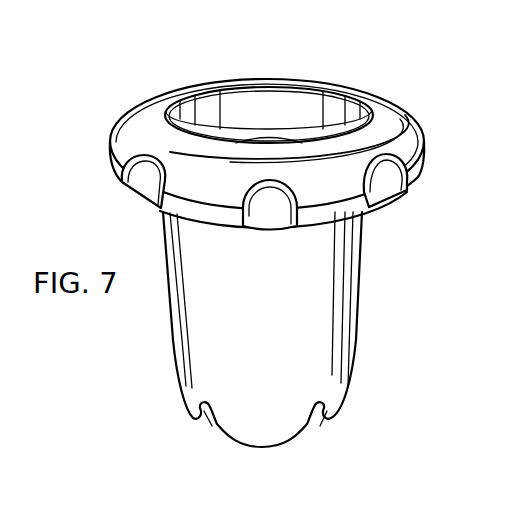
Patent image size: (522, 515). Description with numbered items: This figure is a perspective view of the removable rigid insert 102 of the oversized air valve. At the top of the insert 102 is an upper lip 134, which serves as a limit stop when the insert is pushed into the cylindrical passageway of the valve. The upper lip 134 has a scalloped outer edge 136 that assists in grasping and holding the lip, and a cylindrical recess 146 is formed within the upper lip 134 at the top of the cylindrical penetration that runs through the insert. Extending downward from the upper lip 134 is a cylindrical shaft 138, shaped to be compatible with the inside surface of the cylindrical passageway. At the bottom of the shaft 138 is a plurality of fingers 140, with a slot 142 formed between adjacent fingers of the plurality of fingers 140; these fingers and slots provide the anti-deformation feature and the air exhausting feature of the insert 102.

The removable rigid insert 102 is at (311, 233).
The upper lip 134 is at (415, 135).
The scalloped outer edge 136 is at (387, 190).
The shaft 138 is at (363, 306).
The plurality of fingers 140 is at (335, 428).
The slot 142 is at (216, 423).
The cylindrical recess 146 is at (281, 107).